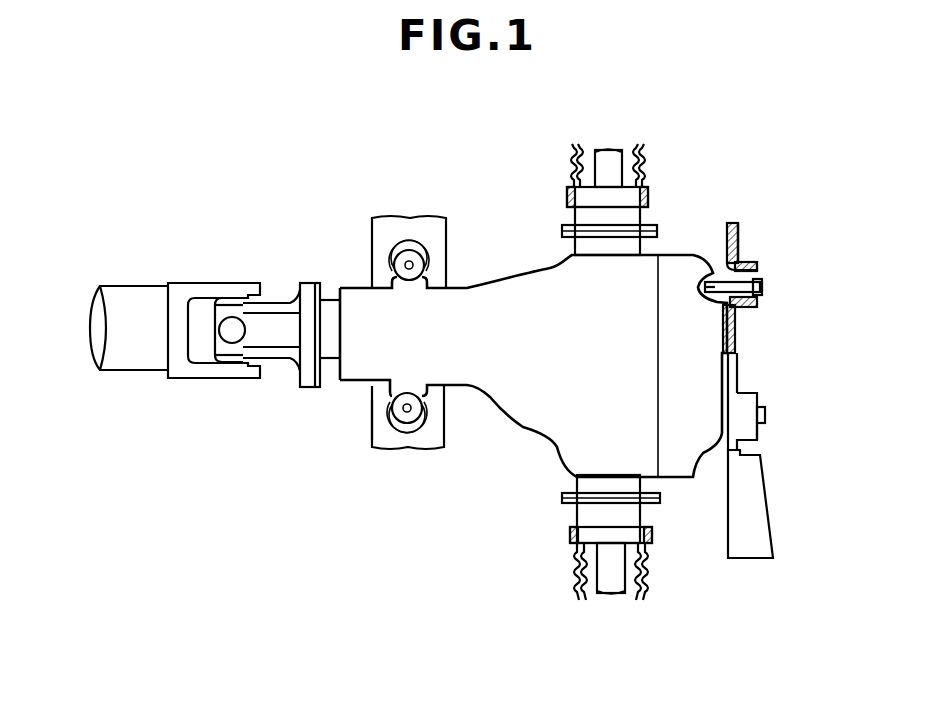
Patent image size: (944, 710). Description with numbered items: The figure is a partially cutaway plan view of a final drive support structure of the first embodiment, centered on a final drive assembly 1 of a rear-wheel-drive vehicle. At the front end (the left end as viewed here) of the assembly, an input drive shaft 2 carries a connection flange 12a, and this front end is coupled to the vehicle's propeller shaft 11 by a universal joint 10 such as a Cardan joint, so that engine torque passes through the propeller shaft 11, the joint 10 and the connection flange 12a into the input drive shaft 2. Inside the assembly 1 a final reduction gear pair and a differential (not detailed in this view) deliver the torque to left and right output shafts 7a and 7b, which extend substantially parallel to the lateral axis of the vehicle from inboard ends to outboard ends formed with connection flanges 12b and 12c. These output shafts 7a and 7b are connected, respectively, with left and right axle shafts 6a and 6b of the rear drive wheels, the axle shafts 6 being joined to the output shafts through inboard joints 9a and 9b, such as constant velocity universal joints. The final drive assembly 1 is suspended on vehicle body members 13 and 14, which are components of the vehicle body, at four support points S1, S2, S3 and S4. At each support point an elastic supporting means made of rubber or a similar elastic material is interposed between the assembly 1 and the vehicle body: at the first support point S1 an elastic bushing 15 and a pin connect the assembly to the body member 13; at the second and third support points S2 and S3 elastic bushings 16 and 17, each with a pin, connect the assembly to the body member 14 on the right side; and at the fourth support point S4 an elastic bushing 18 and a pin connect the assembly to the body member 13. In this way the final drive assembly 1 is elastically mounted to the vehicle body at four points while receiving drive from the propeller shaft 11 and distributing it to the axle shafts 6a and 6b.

The final drive assembly 1 is at (522, 440).
The input drive shaft 2 is at (330, 317).
The axle shaft 6 is at (591, 176).
The left axle shaft 6a is at (612, 580).
The right axle shaft 6b is at (610, 160).
The left output shaft 7a is at (640, 480).
The right output shaft 7b is at (642, 246).
The inboard joint 9a is at (578, 514).
The inboard joint 9b is at (637, 196).
The universal joint 10 is at (231, 274).
The propeller shaft 11 is at (128, 300).
The connection flange 12a is at (312, 386).
The connection flange 12b is at (563, 495).
The connection flange 12c is at (562, 237).
The vehicle body member 13 is at (390, 437).
The vehicle body member 14 is at (753, 548).
The elastic bushing 15 is at (405, 250).
The elastic bushing 16 is at (758, 272).
The elastic bushing 17 is at (750, 405).
The elastic bushing 18 is at (413, 418).
The first support point S1 is at (441, 230).
The second support point S2 is at (752, 246).
The third support point S3 is at (778, 430).
The fourth support point S4 is at (368, 421).